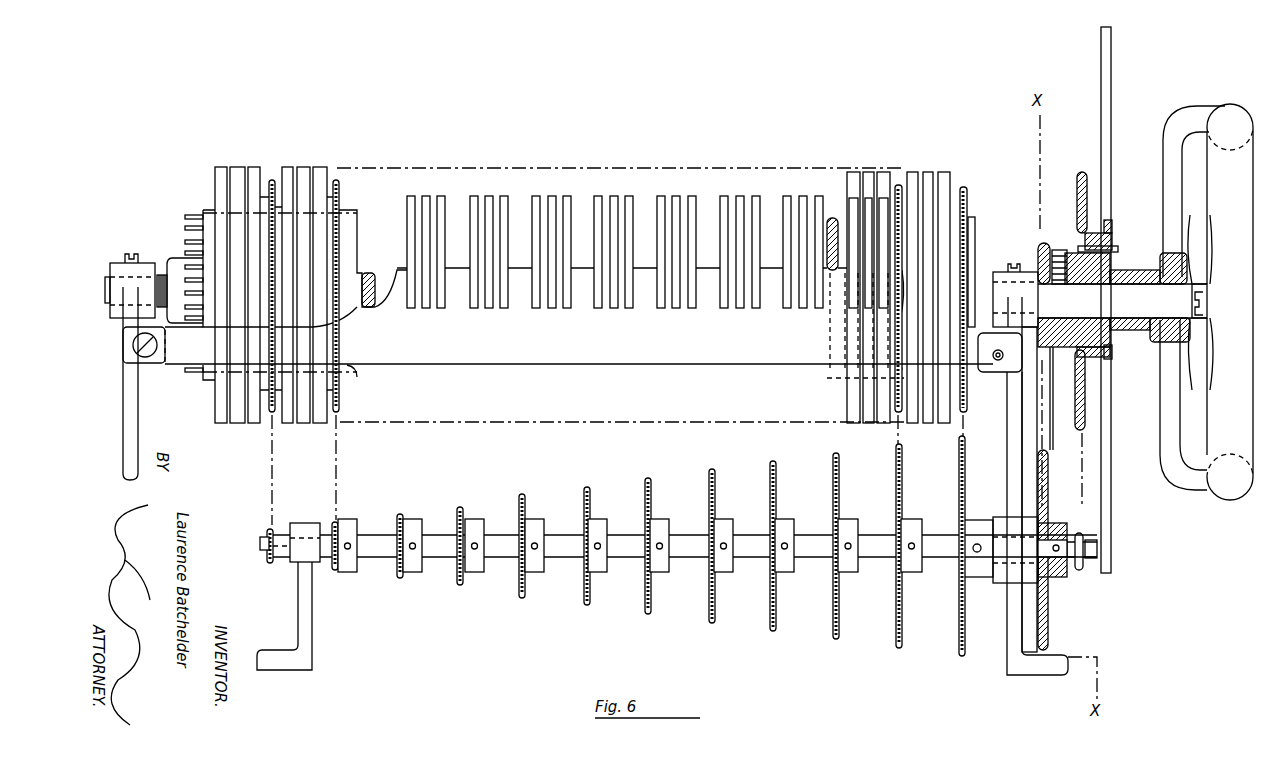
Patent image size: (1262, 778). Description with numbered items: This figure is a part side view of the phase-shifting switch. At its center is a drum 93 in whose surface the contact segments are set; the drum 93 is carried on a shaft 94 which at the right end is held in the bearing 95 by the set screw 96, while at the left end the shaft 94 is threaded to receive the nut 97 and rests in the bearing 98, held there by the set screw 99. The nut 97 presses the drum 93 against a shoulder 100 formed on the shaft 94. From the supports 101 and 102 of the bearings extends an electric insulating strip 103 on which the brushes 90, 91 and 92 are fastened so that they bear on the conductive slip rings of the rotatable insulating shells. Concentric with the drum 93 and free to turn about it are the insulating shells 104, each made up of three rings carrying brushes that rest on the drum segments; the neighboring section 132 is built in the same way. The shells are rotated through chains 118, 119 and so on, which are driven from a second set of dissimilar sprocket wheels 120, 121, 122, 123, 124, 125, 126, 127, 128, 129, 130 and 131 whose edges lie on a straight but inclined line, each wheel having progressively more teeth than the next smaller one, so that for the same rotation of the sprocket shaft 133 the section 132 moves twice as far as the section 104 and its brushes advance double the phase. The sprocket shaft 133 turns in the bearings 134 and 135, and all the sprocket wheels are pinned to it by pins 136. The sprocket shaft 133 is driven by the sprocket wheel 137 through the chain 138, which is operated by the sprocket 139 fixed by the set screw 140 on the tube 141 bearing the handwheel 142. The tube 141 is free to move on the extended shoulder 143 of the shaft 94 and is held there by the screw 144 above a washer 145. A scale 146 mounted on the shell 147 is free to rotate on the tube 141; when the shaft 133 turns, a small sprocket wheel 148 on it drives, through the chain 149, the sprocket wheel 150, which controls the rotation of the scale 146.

The brush 90 is at (412, 195).
The brush 91 is at (427, 195).
The brush 92 is at (442, 195).
The drum 93 is at (358, 225).
The shaft 94 is at (369, 274).
The bearing 95 is at (1013, 263).
The set screw 96 is at (1010, 272).
The nut 97 is at (178, 258).
The bearing 98 is at (120, 262).
The set screw 99 is at (136, 252).
The shoulder 100 is at (971, 217).
The support 101 is at (123, 403).
The support 102 is at (1010, 414).
The electric insulating strip 103 is at (578, 366).
The insulating shell 104 is at (213, 166).
The chain 118 is at (273, 506).
The chain 119 is at (340, 470).
The sprocket wheel 120 is at (266, 564).
The sprocket wheel 121 is at (337, 572).
The sprocket wheel 122 is at (399, 580).
The sprocket wheel 123 is at (461, 586).
The sprocket wheel 124 is at (522, 600).
The sprocket wheel 125 is at (587, 608).
The sprocket wheel 126 is at (648, 618).
The sprocket wheel 127 is at (712, 626).
The sprocket wheel 128 is at (773, 634).
The sprocket wheel 129 is at (836, 642).
The sprocket wheel 130 is at (899, 652).
The sprocket wheel 131 is at (962, 660).
The section 132 is at (280, 166).
The sprocket shaft 133 is at (375, 535).
The bearing 134 is at (295, 598).
The bearing 135 is at (1023, 614).
The pin 136 is at (480, 520).
The sprocket wheel 137 is at (1050, 482).
The chain 138 is at (1052, 433).
The sprocket 139 is at (1058, 250).
The set screw 140 is at (1045, 243).
The tube 141 is at (1120, 268).
The handwheel 142 is at (1230, 104).
The extended shoulder 143 is at (1180, 341).
The screw 144 is at (1212, 335).
The washer 145 is at (1195, 240).
The scale 146 is at (1112, 127).
The shell 147 is at (1093, 233).
The small sprocket wheel 148 is at (1083, 540).
The chain 149 is at (1085, 433).
The sprocket wheel 150 is at (1085, 390).